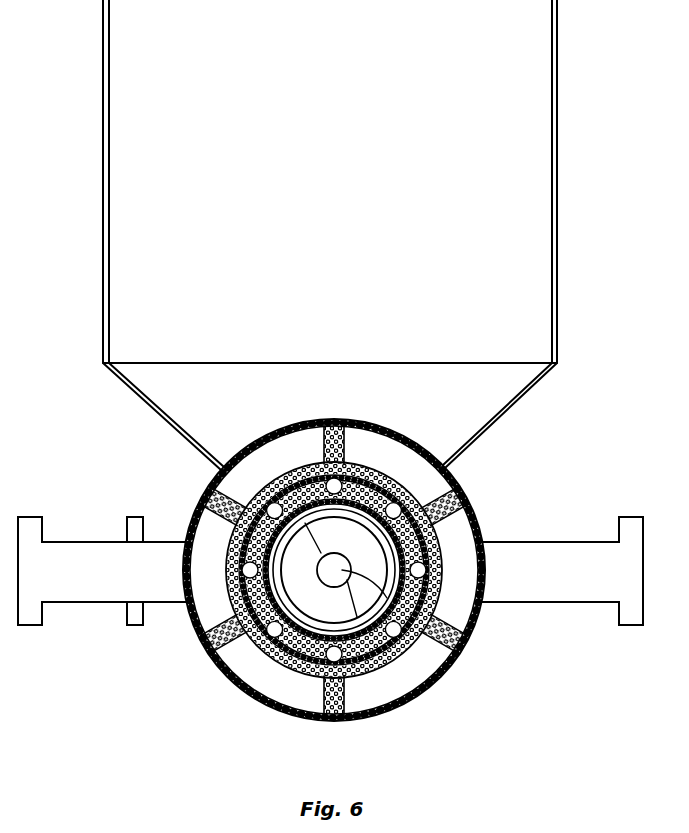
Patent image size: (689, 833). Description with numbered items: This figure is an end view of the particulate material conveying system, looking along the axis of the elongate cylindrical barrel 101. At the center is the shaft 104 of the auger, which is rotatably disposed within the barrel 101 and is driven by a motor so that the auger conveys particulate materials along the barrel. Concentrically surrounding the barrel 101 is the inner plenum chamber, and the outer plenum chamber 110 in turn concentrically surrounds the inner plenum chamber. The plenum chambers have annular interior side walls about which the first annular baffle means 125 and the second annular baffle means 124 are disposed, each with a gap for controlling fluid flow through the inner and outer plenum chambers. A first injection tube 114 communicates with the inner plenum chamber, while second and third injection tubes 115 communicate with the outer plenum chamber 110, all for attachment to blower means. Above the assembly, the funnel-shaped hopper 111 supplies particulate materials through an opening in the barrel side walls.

The hopper 111 is at (153, 122).
The second and third injection tubes 115 is at (77, 570).
The first injection tube 114 is at (133, 513).
The outer plenum chamber 110 is at (225, 677).
The first annular baffle means 125 is at (384, 670).
The second annular baffle means 124 is at (292, 670).
The shaft 104 is at (403, 643).
The barrel 101 is at (250, 595).